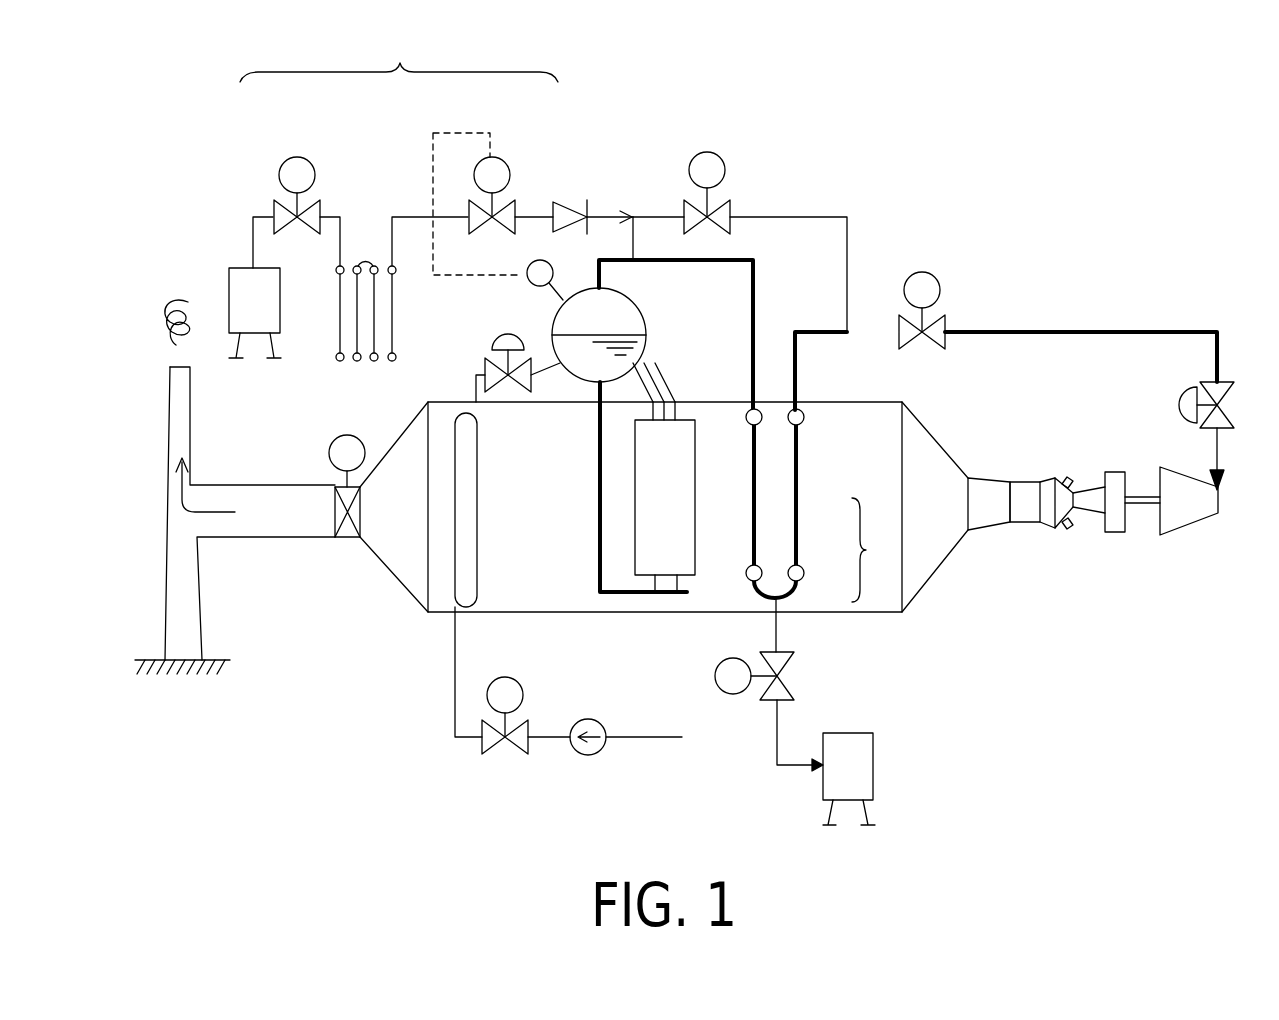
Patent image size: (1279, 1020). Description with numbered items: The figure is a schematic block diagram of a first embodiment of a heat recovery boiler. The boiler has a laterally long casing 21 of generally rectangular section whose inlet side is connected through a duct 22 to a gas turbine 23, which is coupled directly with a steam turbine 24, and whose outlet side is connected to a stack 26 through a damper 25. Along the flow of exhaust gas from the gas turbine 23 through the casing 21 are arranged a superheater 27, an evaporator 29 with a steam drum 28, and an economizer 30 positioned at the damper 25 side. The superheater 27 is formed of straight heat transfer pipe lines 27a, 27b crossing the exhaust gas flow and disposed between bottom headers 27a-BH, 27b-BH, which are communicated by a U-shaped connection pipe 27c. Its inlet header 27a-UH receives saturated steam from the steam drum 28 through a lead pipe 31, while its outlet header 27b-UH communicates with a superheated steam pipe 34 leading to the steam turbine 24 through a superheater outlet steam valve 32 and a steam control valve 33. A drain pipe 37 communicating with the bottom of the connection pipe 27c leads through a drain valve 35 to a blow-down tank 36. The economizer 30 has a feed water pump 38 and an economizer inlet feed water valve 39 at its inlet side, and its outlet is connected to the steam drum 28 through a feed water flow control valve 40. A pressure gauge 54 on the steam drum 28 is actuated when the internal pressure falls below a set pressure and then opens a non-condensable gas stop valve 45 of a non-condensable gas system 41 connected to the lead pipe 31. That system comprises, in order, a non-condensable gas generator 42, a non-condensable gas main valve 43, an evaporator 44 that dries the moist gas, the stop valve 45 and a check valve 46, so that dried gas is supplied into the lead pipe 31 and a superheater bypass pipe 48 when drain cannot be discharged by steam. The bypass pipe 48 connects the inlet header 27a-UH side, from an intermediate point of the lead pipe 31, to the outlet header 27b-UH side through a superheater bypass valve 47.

The casing 21 is at (882, 613).
The duct 22 is at (995, 532).
The gas turbine 23 is at (1057, 532).
The steam turbine 24 is at (1192, 537).
The damper 25 is at (351, 540).
The stack 26 is at (197, 428).
The superheater 27 is at (876, 550).
The straight pipe line 27a is at (754, 516).
The straight pipe line 27b is at (797, 541).
The U-shaped connection pipe 27c is at (792, 585).
The inlet side header 27a-UH is at (746, 415).
The outlet side header 27b-UH is at (803, 422).
The bottom header 27a-BH is at (746, 580).
The bottom header 27b-BH is at (784, 585).
The steam drum 28 is at (646, 318).
The evaporator 29 is at (700, 500).
The economizer 30 is at (478, 505).
The lead pipe 31 is at (740, 259).
The superheater outlet steam valve 32 is at (938, 280).
The steam control valve 33 is at (1236, 405).
The superheated steam pipe 34 is at (1088, 325).
The drain valve 35 is at (733, 695).
The blow-down tank 36 is at (876, 763).
The drain pipe 37 is at (780, 779).
The feed water pump 38 is at (588, 756).
The economizer inlet feed water valve 39 is at (505, 757).
The feed water flow control valve 40 is at (488, 343).
The non-condensable gas system 41 is at (399, 56).
The non-condensable gas generator 42 is at (258, 212).
The non-condensable gas main valve 43 is at (297, 157).
The evaporator 44 is at (363, 265).
The non-condensable gas stop valve 45 is at (501, 160).
The check valve 46 is at (554, 200).
The superheater bypass valve 47 is at (707, 152).
The superheater bypass pipe 48 is at (793, 210).
The pressure gauge 54 is at (530, 282).